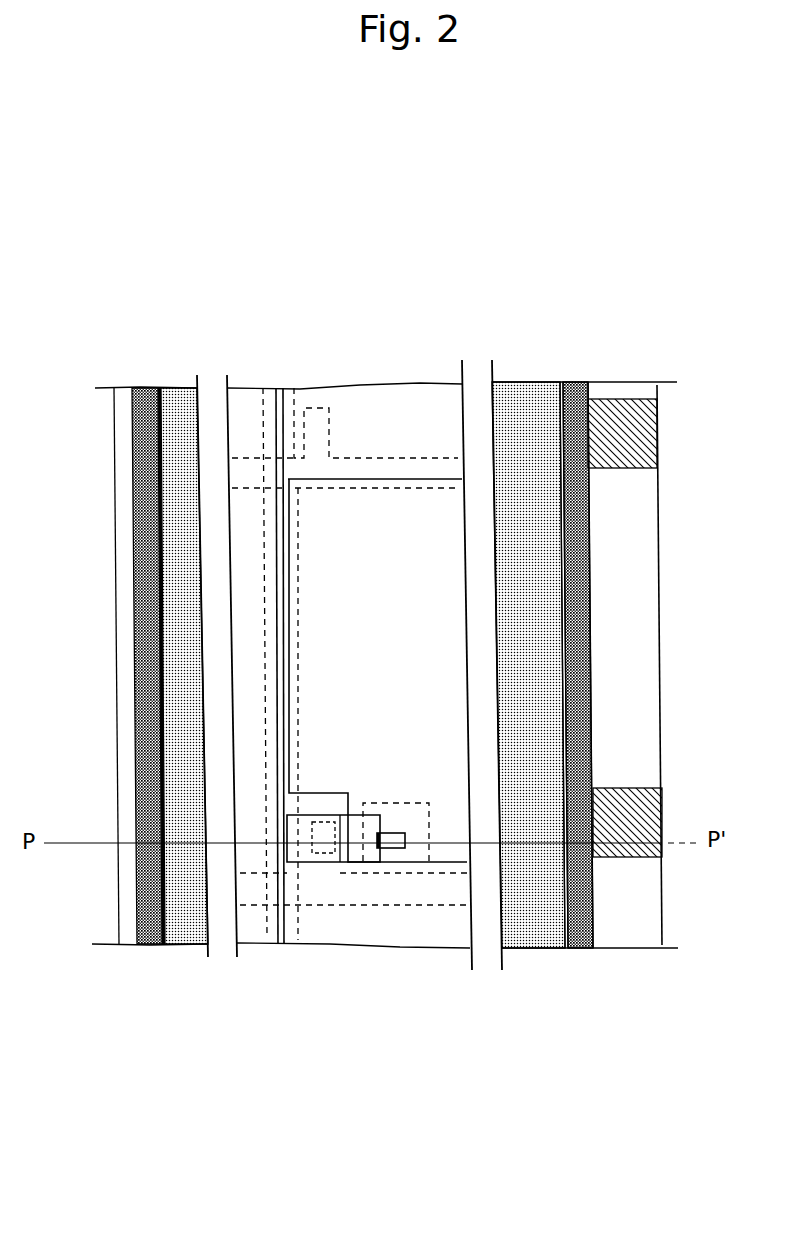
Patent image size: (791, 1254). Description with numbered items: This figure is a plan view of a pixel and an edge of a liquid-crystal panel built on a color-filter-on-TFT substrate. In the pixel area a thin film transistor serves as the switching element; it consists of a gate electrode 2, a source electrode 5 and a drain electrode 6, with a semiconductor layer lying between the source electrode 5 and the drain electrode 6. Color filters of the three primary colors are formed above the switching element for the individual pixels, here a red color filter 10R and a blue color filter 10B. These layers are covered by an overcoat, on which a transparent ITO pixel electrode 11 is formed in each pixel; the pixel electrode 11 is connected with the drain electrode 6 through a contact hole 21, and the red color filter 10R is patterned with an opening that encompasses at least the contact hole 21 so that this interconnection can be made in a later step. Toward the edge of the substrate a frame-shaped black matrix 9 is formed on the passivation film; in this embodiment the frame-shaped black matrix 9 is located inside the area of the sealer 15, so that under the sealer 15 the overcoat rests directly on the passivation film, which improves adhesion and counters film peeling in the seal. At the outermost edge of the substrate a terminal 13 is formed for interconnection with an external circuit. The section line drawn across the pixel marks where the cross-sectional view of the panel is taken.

The gate electrode 2 is at (320, 893).
The source electrode 5 is at (267, 855).
The drain electrode 6 is at (362, 855).
The frame-shaped black matrix 9 is at (522, 388).
The blue color filter 10B is at (243, 397).
The red color filter 10R is at (340, 397).
The pixel electrode 11 is at (410, 480).
The terminal 13 is at (622, 847).
The sealer 15 is at (583, 400).
The contact hole 21 is at (398, 847).